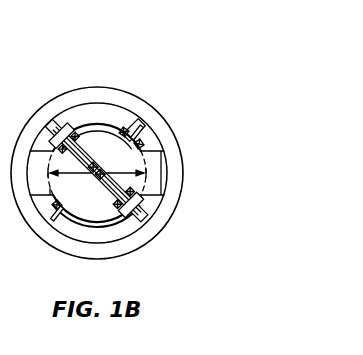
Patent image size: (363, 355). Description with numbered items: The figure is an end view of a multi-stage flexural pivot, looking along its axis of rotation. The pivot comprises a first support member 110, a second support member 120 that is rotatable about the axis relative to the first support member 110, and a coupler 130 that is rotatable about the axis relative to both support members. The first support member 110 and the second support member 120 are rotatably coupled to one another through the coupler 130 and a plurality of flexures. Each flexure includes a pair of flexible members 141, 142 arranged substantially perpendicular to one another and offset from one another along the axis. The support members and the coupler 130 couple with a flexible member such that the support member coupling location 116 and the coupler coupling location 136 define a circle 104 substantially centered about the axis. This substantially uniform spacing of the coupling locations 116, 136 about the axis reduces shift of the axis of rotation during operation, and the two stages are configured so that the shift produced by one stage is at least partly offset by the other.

The first support member 110 is at (158, 224).
The second support member 120 is at (93, 112).
The coupler 130 is at (102, 142).
The circle 104 is at (150, 152).
The support member coupling location 116 is at (148, 205).
The flexible member 141 is at (145, 177).
The coupler coupling location 136 is at (63, 122).
The flexible member 142 is at (63, 214).